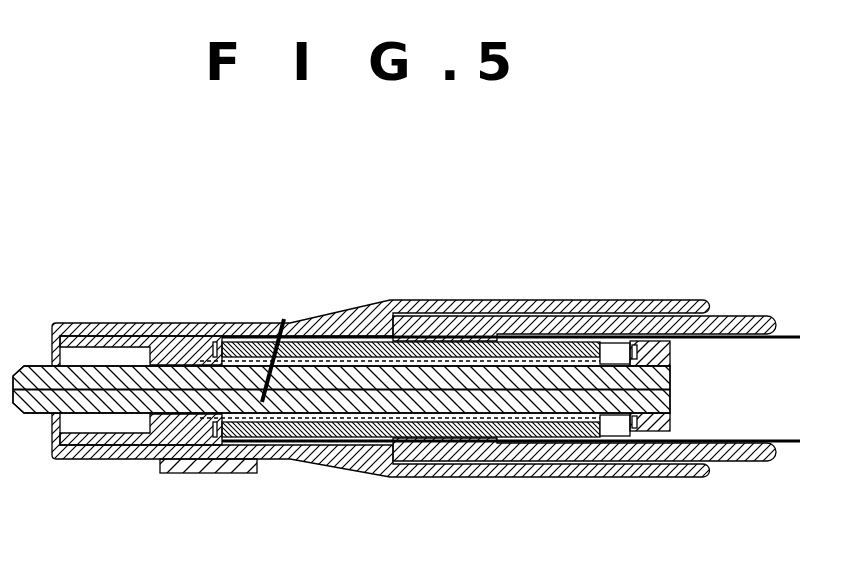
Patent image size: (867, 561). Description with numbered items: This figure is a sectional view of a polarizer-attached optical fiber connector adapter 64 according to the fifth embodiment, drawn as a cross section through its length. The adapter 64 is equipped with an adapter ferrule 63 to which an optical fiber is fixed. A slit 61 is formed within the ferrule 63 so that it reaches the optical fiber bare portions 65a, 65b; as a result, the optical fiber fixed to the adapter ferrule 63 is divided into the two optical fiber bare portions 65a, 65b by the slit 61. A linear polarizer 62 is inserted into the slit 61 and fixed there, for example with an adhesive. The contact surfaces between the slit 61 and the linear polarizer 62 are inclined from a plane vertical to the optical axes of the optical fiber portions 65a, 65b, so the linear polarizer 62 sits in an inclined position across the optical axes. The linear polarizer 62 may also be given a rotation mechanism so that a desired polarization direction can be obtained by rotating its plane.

The slit 61 is at (281, 321).
The linear polarizer 62 is at (283, 321).
The adapter ferrule 63 is at (142, 412).
The polarizer-attached optical fiber connector adapter 64 is at (383, 308).
The optical fiber bare portion 65a is at (83, 393).
The optical fiber bare portion 65b is at (335, 443).